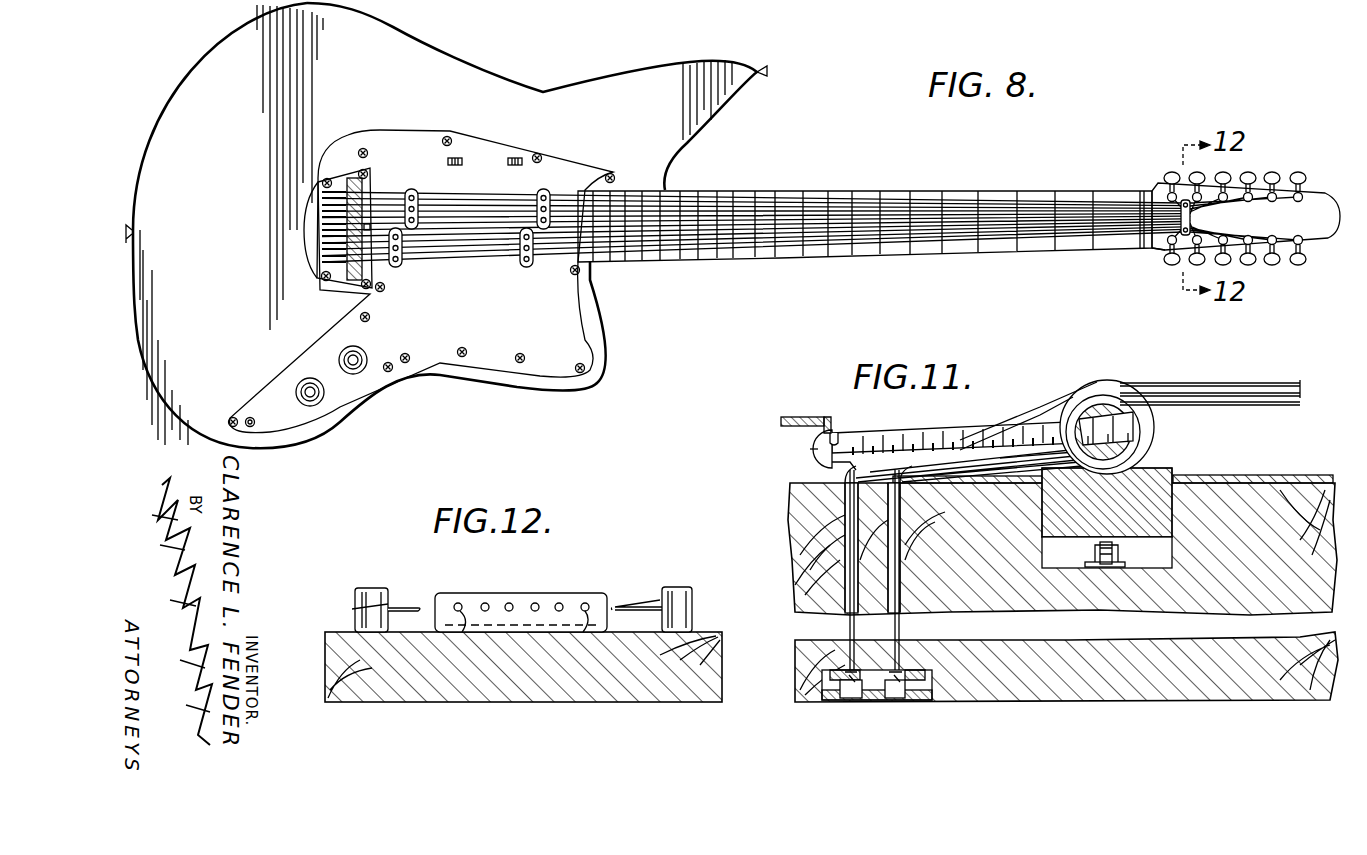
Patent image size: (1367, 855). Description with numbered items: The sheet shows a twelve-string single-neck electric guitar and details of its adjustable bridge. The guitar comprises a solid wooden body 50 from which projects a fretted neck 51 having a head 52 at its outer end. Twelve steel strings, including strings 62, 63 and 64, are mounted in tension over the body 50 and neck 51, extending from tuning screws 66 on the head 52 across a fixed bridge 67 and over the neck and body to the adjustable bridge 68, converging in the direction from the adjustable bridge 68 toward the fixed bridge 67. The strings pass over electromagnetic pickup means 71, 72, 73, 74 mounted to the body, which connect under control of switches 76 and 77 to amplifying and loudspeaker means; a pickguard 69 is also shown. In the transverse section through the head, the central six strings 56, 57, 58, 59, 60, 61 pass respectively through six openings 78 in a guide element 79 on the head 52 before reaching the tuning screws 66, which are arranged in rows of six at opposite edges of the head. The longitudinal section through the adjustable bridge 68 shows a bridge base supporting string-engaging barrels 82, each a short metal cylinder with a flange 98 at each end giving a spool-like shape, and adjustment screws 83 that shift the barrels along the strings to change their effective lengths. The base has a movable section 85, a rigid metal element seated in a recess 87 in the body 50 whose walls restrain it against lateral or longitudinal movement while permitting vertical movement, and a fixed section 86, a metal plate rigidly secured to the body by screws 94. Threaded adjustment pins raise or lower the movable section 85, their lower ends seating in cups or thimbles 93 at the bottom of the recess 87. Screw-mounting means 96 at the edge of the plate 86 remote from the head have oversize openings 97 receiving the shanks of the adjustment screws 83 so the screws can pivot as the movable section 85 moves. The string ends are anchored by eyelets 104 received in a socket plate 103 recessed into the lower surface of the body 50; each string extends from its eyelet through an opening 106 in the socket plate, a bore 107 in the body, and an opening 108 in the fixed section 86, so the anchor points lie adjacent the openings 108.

In FIG. 8, the body 50 is at (525, 40).
In FIG. 11, the body 50 is at (1338, 632).
In FIG. 8, the fretted neck 51 is at (838, 258).
In FIG. 8, the head 52 is at (1314, 200).
In FIG. 12, the head 52 is at (675, 702).
In FIG. 12, the string 56 is at (460, 603).
In FIG. 12, the string 57 is at (486, 603).
In FIG. 12, the string 58 is at (510, 603).
In FIG. 12, the string 59 is at (537, 603).
In FIG. 12, the string 60 is at (560, 603).
In FIG. 12, the string 61 is at (588, 603).
In FIG. 11, the string 62 is at (1255, 382).
In FIG. 11, the string 63 is at (1322, 390).
In FIG. 11, the string 64 is at (1275, 405).
In FIG. 8, the tuning screws 66 is at (1300, 175).
In FIG. 12, the tuning screws 66 is at (372, 590).
In FIG. 8, the fixed bridge 67 is at (1152, 250).
In FIG. 8, the adjustable bridge 68 is at (340, 140).
In FIG. 11, the adjustable bridge 68 is at (1108, 364).
In FIG. 8, the pickguard body portion 69 is at (560, 312).
In FIG. 11, the pickguard body portion 69 is at (1328, 483).
In FIG. 8, the electromagnetic pickup means 71 is at (546, 190).
In FIG. 8, the electromagnetic pickup means 72 is at (526, 268).
In FIG. 8, the electromagnetic pickup means 73 is at (425, 170).
In FIG. 8, the electromagnetic pickup means 74 is at (393, 268).
In FIG. 8, the switch 76 is at (522, 158).
In FIG. 8, the switch 77 is at (458, 156).
In FIG. 12, the openings 78 is at (462, 632).
In FIG. 8, the guide element 79 is at (1182, 212).
In FIG. 12, the guide element 79 is at (442, 598).
In FIG. 11, the string-engaging barrels 82 is at (1130, 395).
In FIG. 11, the adjustment screws 83 is at (875, 433).
In FIG. 11, the movable section 85 is at (1172, 518).
In FIG. 11, the fixed section 86 is at (1212, 475).
In FIG. 11, the recess 87 is at (1160, 568).
In FIG. 11, the cups or thimbles 93 is at (1122, 560).
In FIG. 11, the screws 94 is at (1098, 550).
In FIG. 11, the screw-mounting means 96 is at (795, 418).
In FIG. 11, the oversize openings 97 is at (845, 436).
In FIG. 11, the flange 98 is at (1050, 464).
In FIG. 11, the socket plate 103 is at (870, 702).
In FIG. 11, the eyelets 104 is at (851, 700).
In FIG. 11, the opening 106 is at (898, 655).
In FIG. 11, the bore 107 is at (840, 498).
In FIG. 11, the opening 108 is at (842, 480).